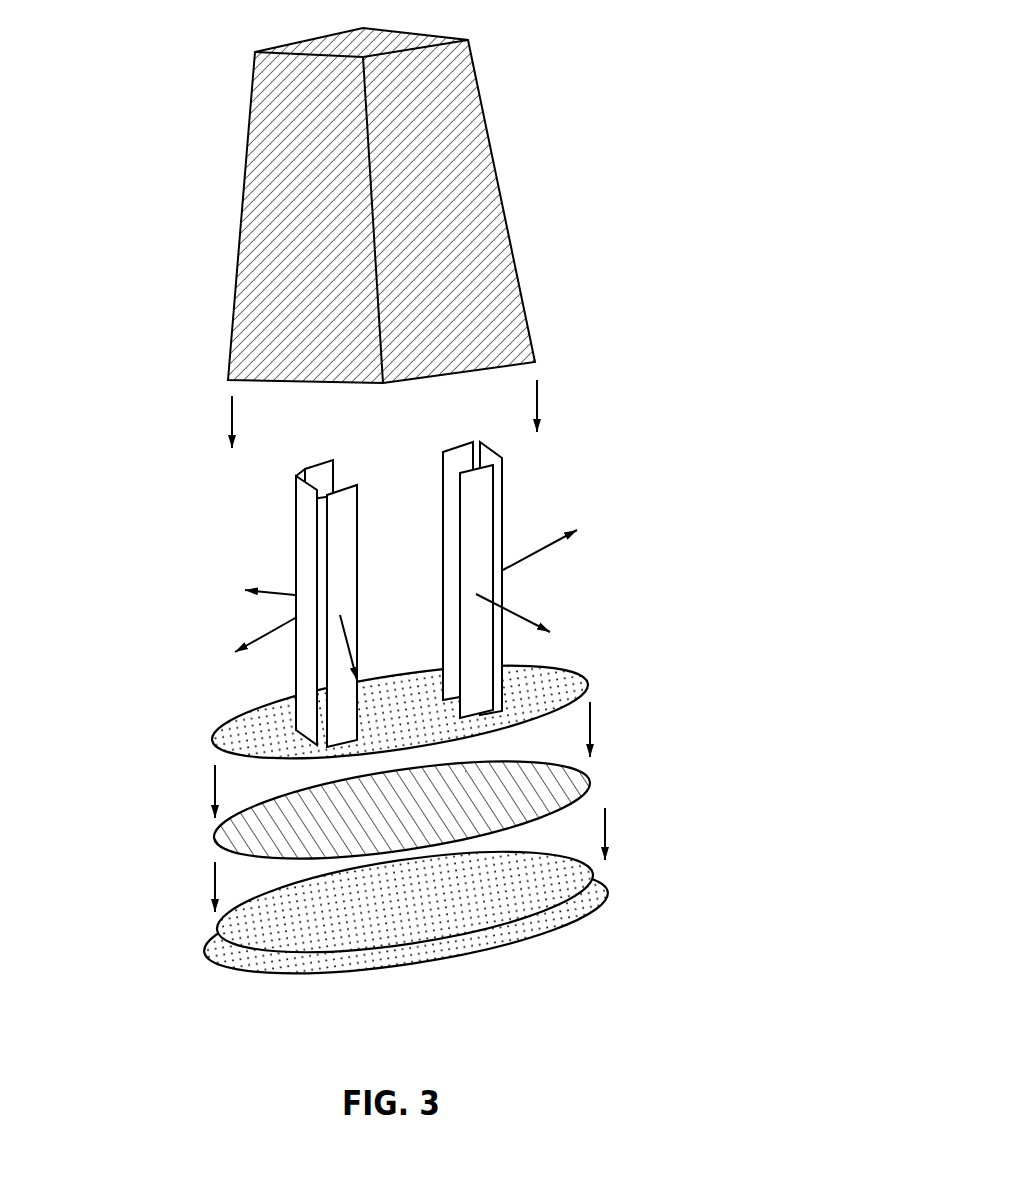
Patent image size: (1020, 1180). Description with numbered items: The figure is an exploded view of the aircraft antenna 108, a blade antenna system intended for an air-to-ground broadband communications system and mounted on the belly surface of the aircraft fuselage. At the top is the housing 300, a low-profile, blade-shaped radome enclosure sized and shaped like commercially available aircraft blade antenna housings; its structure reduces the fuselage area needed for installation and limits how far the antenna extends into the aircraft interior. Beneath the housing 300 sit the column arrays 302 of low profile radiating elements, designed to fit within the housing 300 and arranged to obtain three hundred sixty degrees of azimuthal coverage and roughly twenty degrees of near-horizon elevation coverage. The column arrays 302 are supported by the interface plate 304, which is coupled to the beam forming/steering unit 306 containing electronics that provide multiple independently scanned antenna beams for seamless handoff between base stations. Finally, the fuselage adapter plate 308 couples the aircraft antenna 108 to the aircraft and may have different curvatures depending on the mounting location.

The aircraft antenna 108 is at (614, 103).
The housing 300 is at (232, 243).
The column arrays 302 is at (293, 545).
The interface plate 304 is at (208, 735).
The beam forming/steering unit 306 is at (212, 842).
The fuselage adapter plate 308 is at (210, 932).